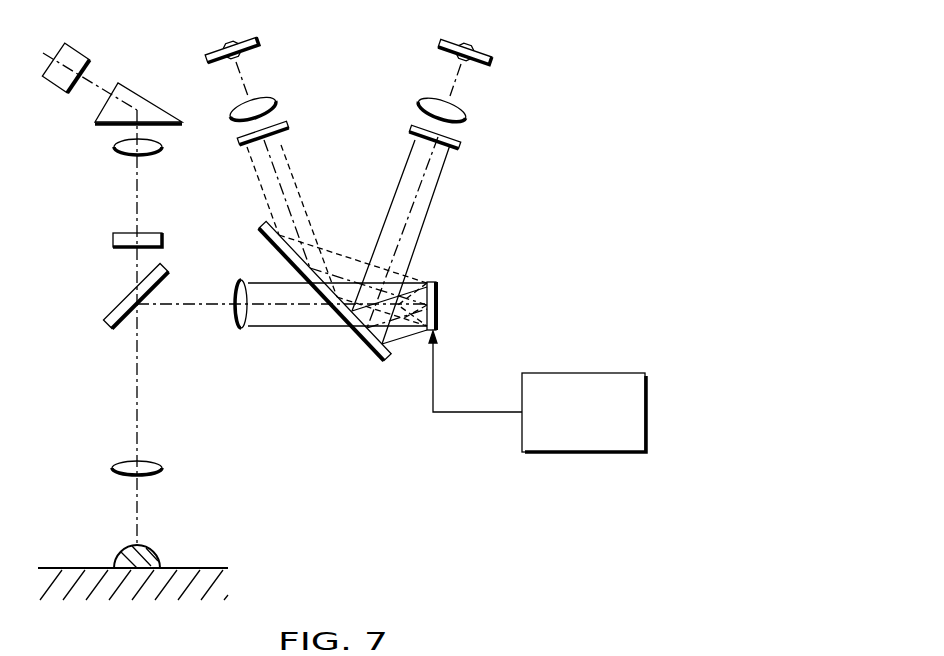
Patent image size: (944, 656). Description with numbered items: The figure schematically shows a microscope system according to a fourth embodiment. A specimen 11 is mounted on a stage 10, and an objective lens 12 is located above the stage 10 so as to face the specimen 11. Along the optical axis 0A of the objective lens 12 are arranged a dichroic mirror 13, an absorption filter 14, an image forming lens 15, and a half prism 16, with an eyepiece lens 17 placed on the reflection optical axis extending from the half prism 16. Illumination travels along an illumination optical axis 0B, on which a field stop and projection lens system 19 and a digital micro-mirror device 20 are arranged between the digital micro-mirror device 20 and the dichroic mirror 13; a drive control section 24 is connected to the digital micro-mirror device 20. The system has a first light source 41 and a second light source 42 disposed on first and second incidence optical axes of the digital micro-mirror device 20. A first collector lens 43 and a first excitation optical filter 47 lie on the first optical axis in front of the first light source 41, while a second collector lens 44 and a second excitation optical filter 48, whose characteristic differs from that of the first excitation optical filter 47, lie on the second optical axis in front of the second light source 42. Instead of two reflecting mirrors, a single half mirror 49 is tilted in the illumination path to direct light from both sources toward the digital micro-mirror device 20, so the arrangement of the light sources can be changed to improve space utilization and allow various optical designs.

The stage 10 is at (208, 567).
The specimen 11 is at (112, 560).
The objective lens 12 is at (112, 470).
The dichroic mirror 13 is at (108, 326).
The absorption filter 14 is at (112, 238).
The image forming lens 15 is at (114, 147).
The half prism 16 is at (128, 92).
The eyepiece lens 17 is at (77, 51).
The field stop and projection lens system 19 is at (242, 330).
The digital micro-mirror device 20 is at (438, 286).
The drive control section 24 is at (646, 416).
The first light source 41 is at (492, 60).
The second light source 42 is at (258, 44).
The first collector lens 43 is at (467, 110).
The second collector lens 44 is at (277, 100).
The first excitation optical filter 47 is at (460, 148).
The second excitation optical filter 48 is at (290, 128).
The half mirror 49 is at (367, 347).
The optical axis 0A is at (139, 432).
The illumination optical axis 0B is at (178, 306).